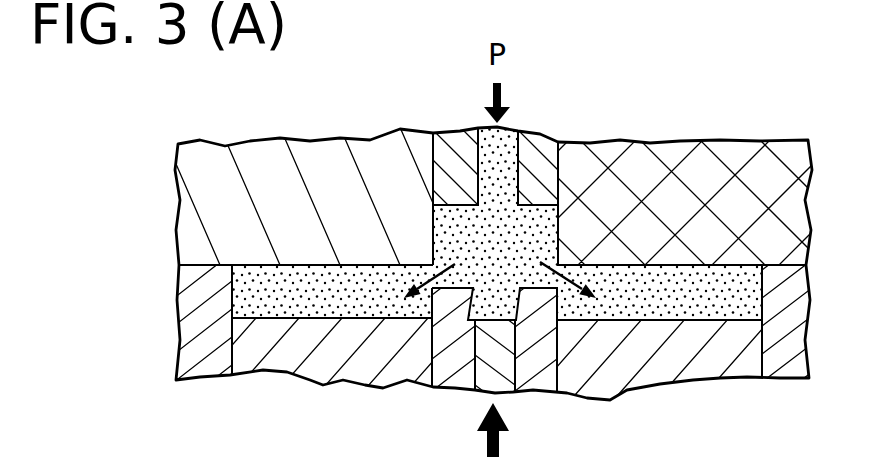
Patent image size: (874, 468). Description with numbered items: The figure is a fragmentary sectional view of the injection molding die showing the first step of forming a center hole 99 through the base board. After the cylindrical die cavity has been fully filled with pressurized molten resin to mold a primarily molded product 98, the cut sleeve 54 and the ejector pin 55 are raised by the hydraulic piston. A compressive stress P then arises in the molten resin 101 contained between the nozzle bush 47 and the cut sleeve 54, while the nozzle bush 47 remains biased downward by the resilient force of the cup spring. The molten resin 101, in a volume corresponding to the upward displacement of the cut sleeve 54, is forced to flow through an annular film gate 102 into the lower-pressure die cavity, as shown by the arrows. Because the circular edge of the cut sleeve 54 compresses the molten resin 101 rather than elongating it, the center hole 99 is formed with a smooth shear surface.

The nozzle bush 47 is at (538, 162).
The cut sleeve 54 is at (456, 364).
The ejector pin 55 is at (505, 373).
The primarily molded product 98 is at (307, 290).
The center hole 99 is at (436, 334).
The molten resin 101 is at (612, 163).
The annular film gate 102 is at (432, 265).